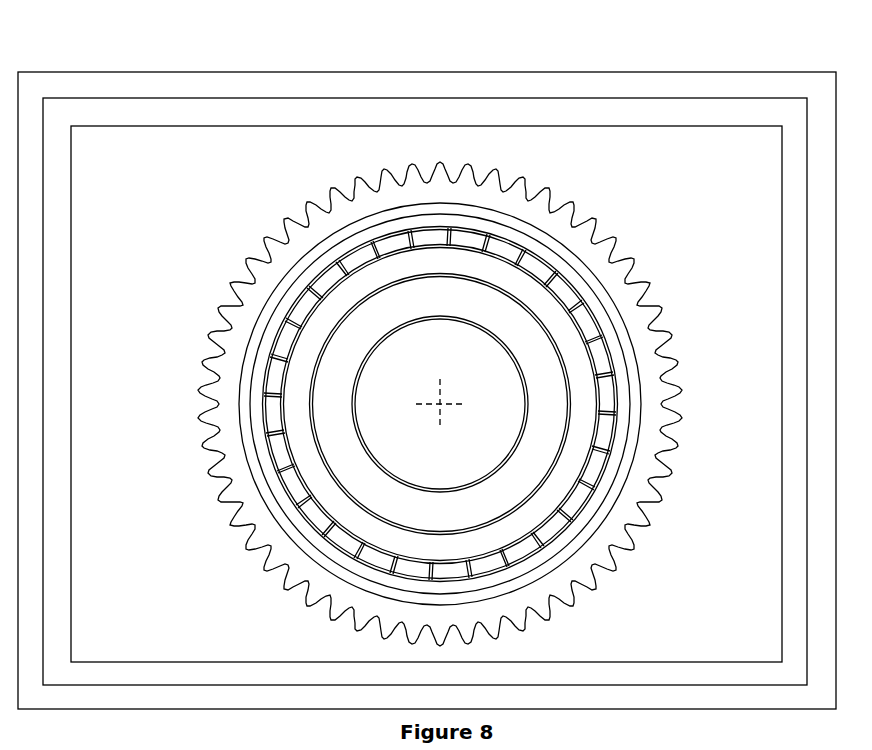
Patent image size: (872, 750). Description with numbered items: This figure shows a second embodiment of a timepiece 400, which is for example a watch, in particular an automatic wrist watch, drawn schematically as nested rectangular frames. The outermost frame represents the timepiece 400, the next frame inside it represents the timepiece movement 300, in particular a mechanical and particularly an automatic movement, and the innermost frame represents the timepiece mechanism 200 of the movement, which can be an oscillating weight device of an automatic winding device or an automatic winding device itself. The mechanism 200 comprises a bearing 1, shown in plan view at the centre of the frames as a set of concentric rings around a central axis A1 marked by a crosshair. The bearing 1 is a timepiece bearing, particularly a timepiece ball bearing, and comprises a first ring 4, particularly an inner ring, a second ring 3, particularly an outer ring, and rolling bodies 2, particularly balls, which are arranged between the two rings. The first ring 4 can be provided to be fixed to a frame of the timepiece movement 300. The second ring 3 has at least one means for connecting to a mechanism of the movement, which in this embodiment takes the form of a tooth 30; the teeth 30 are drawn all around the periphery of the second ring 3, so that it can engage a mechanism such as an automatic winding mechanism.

The bearing 1 is at (163, 374).
The rolling bodies 2 is at (312, 510).
The second ring 3 is at (255, 288).
The tooth 30 is at (307, 207).
The first ring 4 is at (553, 323).
The rotation axis A1 is at (441, 404).
The timepiece mechanism 200 is at (597, 126).
The timepiece movement 300 is at (651, 98).
The timepiece 400 is at (705, 72).